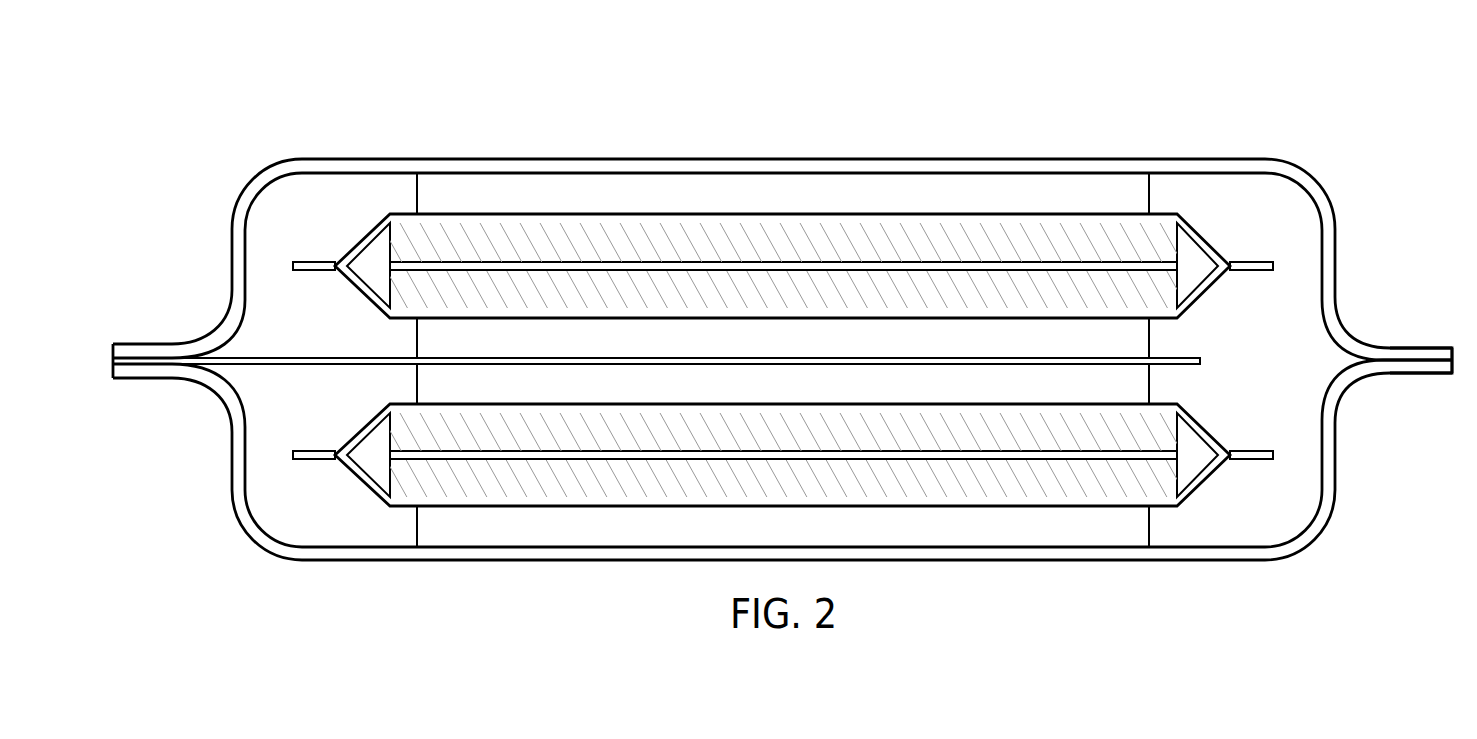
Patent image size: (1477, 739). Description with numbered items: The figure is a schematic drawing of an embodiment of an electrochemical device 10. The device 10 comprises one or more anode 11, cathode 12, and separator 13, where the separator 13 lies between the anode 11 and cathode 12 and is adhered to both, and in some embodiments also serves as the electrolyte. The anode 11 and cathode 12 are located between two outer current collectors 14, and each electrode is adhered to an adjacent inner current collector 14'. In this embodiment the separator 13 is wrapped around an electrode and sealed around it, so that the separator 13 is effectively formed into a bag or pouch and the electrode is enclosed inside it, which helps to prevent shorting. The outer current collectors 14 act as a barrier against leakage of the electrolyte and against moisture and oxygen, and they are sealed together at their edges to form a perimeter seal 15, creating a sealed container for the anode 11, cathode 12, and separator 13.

The electrochemical device 10 is at (1045, 130).
The anode 11 is at (1182, 238).
The cathode 12 is at (1149, 190).
The separator 13 is at (301, 258).
The outer current collector 14 is at (782, 339).
The inner current collector 14' is at (688, 361).
The perimeter seal 15 is at (1420, 377).